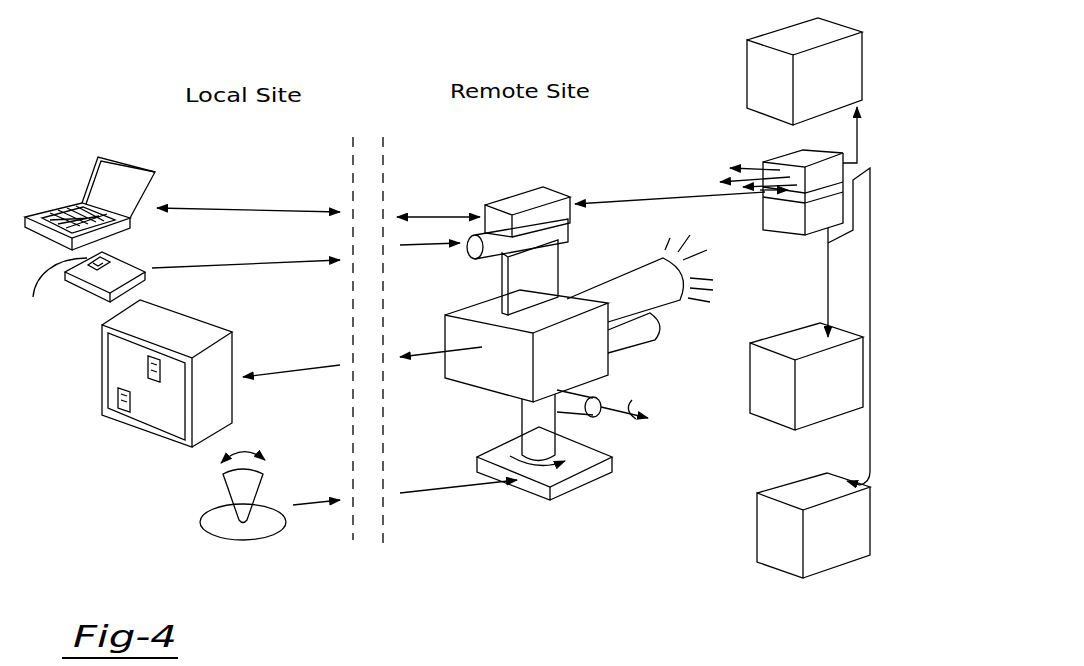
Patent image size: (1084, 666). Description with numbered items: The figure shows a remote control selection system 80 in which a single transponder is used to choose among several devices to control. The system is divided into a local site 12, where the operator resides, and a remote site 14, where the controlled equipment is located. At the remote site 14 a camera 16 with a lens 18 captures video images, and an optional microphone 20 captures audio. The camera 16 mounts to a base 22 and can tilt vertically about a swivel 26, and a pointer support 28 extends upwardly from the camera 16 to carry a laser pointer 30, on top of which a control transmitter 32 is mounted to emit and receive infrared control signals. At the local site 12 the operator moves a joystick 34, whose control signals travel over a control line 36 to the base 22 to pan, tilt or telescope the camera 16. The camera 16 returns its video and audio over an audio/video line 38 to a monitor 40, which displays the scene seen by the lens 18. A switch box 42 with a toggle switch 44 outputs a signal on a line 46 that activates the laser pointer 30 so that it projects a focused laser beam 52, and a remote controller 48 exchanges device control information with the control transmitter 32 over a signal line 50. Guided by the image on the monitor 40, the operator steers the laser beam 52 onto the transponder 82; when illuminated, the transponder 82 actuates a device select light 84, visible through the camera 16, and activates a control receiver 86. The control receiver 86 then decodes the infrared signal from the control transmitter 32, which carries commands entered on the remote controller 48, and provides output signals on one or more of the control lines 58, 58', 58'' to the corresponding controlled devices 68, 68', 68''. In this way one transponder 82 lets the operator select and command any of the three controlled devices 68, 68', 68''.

The local site 12 is at (305, 191).
The remote site 14 is at (603, 148).
The camera 16 is at (583, 365).
The lens 18 is at (637, 280).
The microphone 20 is at (638, 333).
The base 22 is at (570, 490).
The swivel 26 is at (591, 425).
The pointer support 28 is at (540, 277).
The laser pointer 30 is at (497, 255).
The control transmitter 32 is at (535, 203).
The joystick 34 is at (255, 530).
The control line 36 is at (313, 505).
The audio/video line 38 is at (295, 372).
The monitor 40 is at (160, 413).
The switch box 42 is at (85, 300).
The toggle switch 44 is at (52, 292).
The line 46 is at (300, 268).
The remote controller 48 is at (58, 203).
The signal line 50 is at (270, 208).
The laser beam 52 is at (665, 183).
The control line 58 is at (834, 135).
The control line 58' is at (786, 282).
The control line 58'' is at (843, 326).
The controlled device 68 is at (771, 71).
The controlled device 68' is at (791, 398).
The controlled device 68'' is at (790, 543).
The remote control selection system 80 is at (140, 124).
The transponder 82 is at (797, 193).
The device select light 84 is at (790, 160).
The control receiver 86 is at (795, 227).